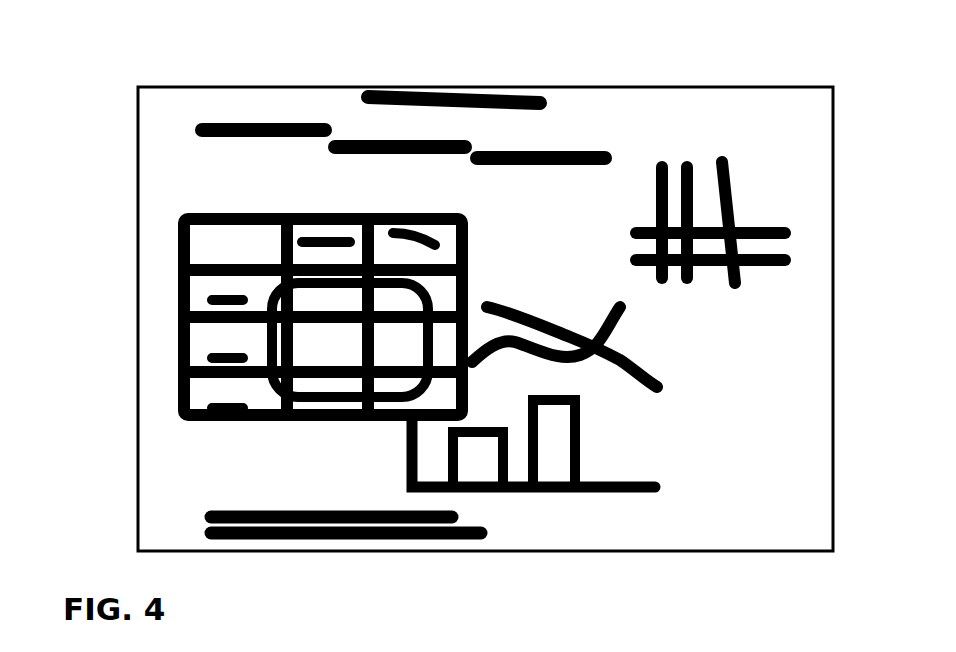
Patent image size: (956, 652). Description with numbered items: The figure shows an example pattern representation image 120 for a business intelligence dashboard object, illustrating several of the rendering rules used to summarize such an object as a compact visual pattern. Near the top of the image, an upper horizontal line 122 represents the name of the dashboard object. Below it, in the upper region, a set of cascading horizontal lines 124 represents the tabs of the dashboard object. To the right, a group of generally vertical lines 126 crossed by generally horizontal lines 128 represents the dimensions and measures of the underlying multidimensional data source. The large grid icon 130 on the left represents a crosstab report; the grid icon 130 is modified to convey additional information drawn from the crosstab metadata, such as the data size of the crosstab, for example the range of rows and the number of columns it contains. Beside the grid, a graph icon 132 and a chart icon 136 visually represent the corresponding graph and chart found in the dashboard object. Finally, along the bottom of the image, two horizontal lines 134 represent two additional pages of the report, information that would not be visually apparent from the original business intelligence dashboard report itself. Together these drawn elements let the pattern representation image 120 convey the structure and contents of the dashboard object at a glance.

The pattern representation image 120 is at (100, 92).
The upper horizontal line 122 is at (547, 104).
The cascading horizontal lines 124 is at (470, 162).
The generally vertical lines 126 is at (665, 165).
The generally horizontal lines 128 is at (633, 234).
The grid icon 130 is at (470, 240).
The graph icon 132 is at (628, 356).
The horizontal lines 134 is at (306, 511).
The chart icon 136 is at (625, 480).